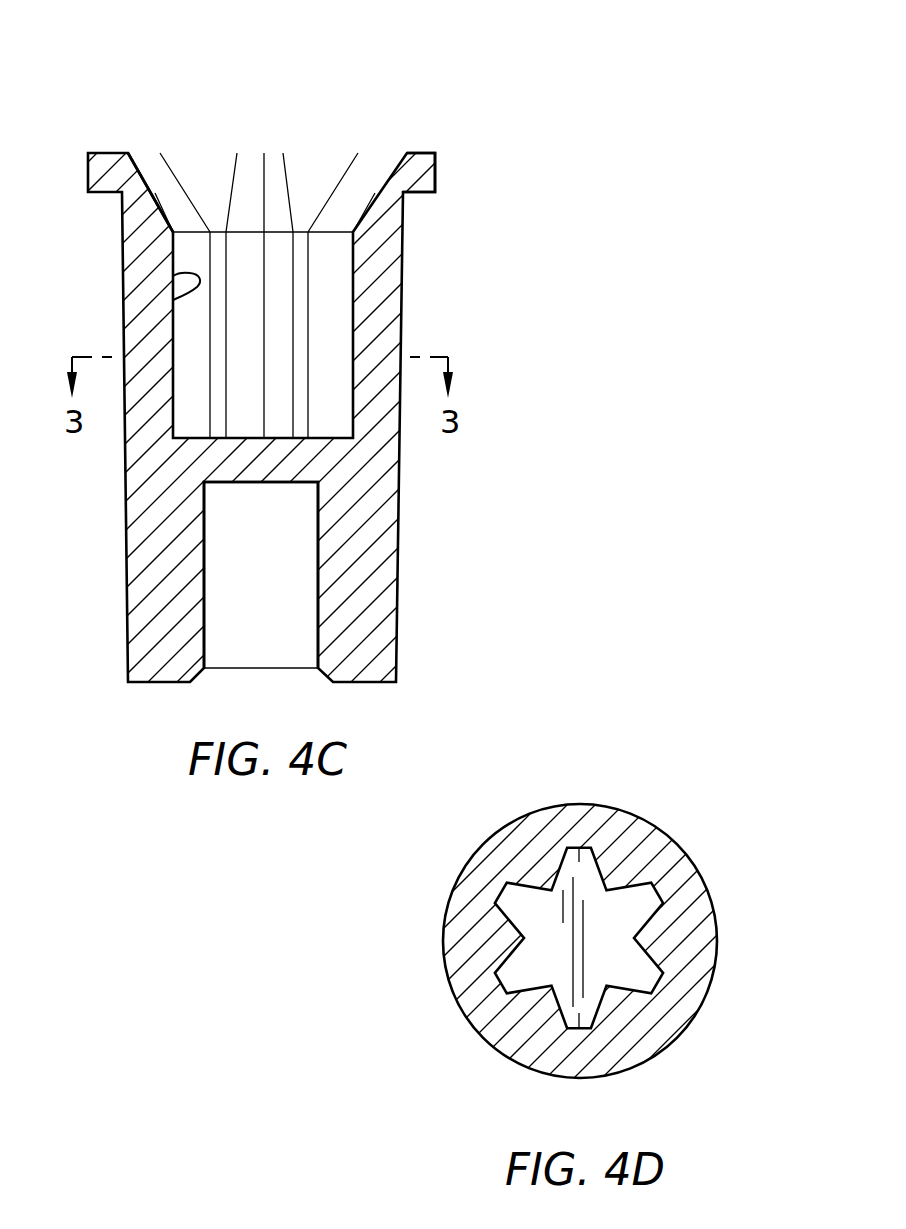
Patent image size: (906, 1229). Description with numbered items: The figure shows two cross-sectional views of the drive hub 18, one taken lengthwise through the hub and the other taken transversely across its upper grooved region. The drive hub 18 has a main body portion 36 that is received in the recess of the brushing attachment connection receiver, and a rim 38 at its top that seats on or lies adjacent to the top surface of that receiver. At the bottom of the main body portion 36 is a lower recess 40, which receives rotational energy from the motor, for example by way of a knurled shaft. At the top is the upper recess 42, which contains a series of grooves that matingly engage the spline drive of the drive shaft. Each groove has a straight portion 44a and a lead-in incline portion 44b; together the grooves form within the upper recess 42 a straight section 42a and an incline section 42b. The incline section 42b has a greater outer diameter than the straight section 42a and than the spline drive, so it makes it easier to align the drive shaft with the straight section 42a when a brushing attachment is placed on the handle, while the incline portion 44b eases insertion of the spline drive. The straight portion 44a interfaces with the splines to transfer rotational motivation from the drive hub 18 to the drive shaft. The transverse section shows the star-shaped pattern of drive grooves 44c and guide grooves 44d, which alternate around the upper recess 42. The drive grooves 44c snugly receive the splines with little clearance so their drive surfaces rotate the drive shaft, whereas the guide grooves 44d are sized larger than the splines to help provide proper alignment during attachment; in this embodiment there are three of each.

In FIG. 4C, the drive hub 18 is at (488, 133).
In FIG. 4D, the drive hub 18 is at (700, 776).
In FIG. 4C, the main body portion 36 is at (370, 510).
In FIG. 4D, the main body portion 36 is at (530, 850).
In FIG. 4C, the rim 38 is at (427, 172).
In FIG. 4C, the lower recess 40 is at (275, 595).
In FIG. 4C, the upper recess 42 is at (274, 126).
In FIG. 4C, the straight section 42a is at (330, 333).
In FIG. 4C, the incline section 42b is at (173, 208).
In FIG. 4C, the straight portion 44a is at (173, 300).
In FIG. 4C, the incline portion 44b is at (155, 194).
In FIG. 4D, the drive groove 44c is at (520, 906).
In FIG. 4D, the guide groove 44d is at (580, 848).